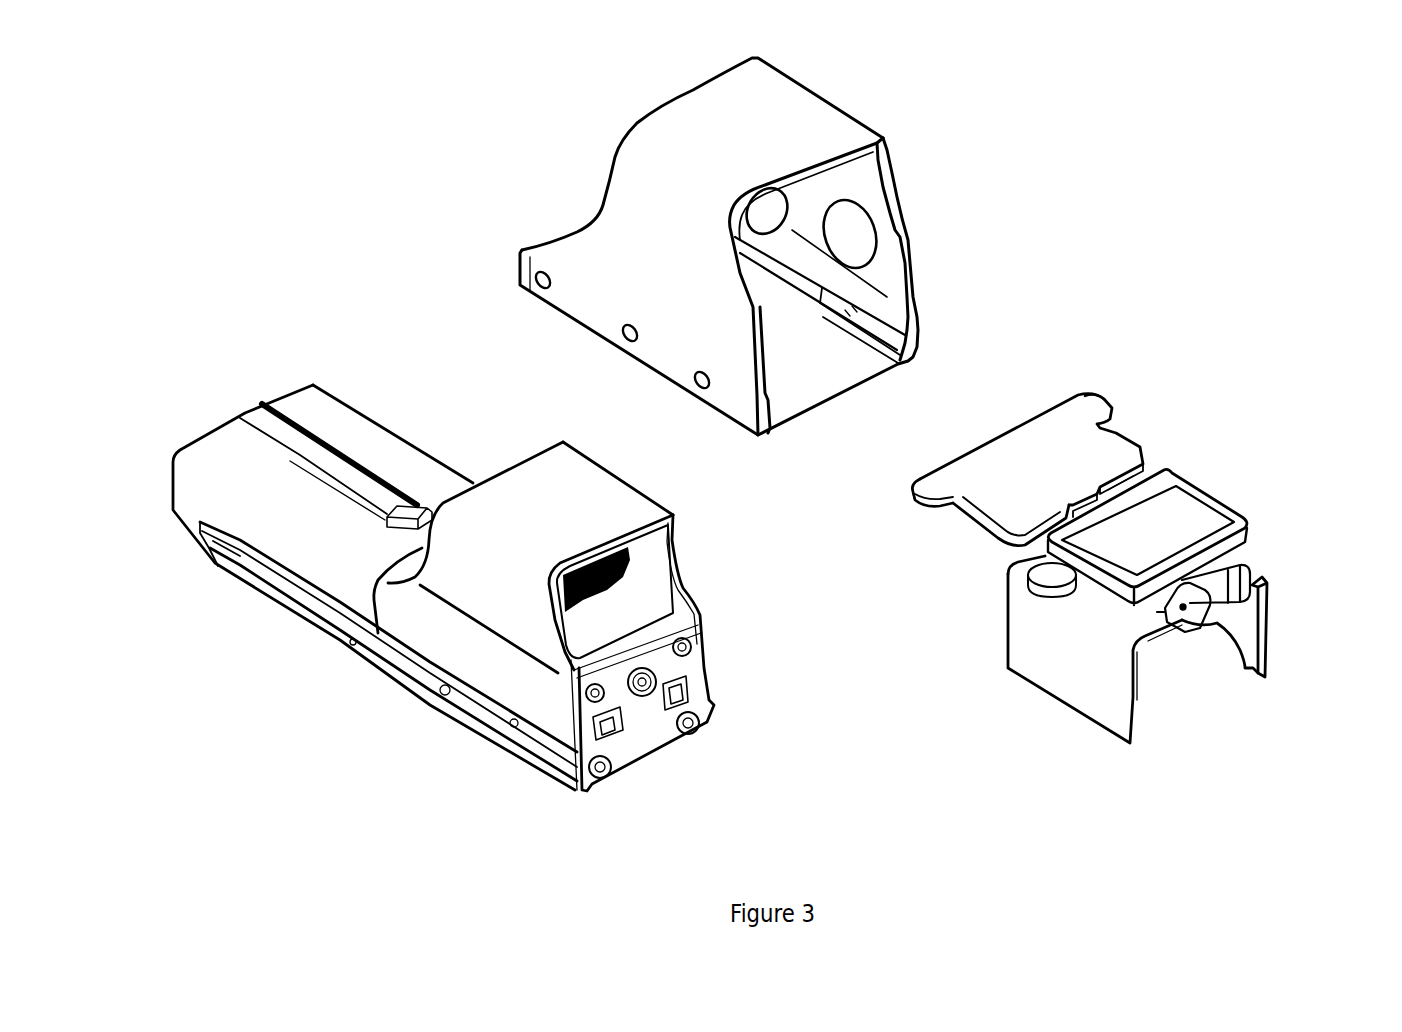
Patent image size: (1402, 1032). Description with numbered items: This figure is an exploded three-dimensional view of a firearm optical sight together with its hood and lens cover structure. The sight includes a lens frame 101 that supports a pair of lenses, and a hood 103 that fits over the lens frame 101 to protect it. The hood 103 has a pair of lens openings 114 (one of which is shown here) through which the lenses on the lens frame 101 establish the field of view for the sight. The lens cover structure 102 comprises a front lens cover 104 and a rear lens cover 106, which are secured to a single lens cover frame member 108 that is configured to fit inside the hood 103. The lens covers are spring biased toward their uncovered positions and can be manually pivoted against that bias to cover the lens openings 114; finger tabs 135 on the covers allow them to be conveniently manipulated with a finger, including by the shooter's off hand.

The lens frame 101 is at (652, 494).
The lens cover structure 102 is at (1261, 571).
The hood 103 is at (848, 106).
The front lens cover 104 is at (1130, 439).
The rear lens cover 106 is at (1200, 481).
The lens cover frame member 108 is at (1008, 643).
The lens openings 114 is at (607, 629).
The finger tabs 135 is at (1093, 396).